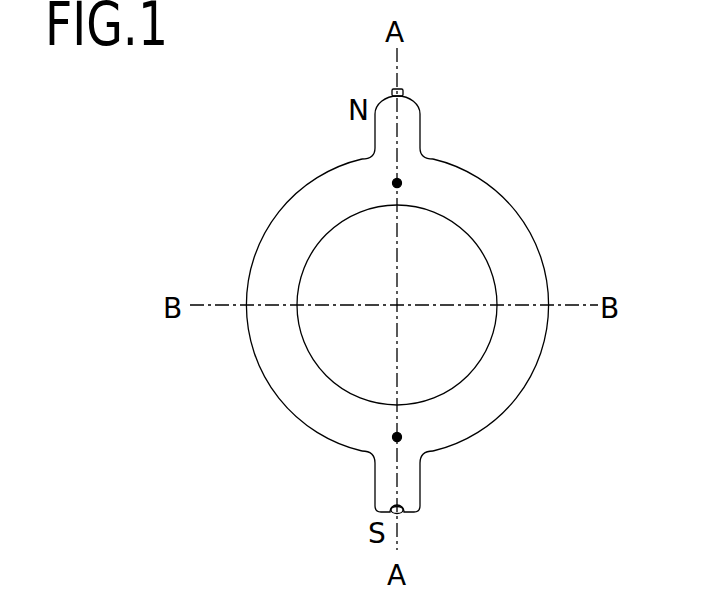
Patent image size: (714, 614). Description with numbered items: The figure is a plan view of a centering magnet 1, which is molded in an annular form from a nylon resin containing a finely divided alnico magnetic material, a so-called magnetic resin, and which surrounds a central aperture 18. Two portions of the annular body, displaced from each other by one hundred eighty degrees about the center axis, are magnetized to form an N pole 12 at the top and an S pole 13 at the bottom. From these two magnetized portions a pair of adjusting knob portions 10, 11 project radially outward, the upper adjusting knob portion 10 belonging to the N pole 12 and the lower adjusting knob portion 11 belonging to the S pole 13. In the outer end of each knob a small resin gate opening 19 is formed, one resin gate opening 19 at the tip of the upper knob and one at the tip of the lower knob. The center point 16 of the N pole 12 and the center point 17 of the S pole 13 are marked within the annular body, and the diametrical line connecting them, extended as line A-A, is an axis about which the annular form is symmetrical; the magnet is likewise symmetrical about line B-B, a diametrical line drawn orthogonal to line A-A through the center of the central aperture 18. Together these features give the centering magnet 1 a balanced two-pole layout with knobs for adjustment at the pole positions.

The centering magnet 1 is at (542, 152).
The adjusting knob portion 10 is at (413, 115).
The adjusting knob portion 11 is at (380, 482).
The N pole 12 is at (422, 168).
The S pole 13 is at (378, 437).
The center point of the N pole 16 is at (397, 183).
The center point of the S pole 17 is at (423, 453).
The central aperture 18 is at (472, 287).
The resin gate opening 19 is at (405, 90).